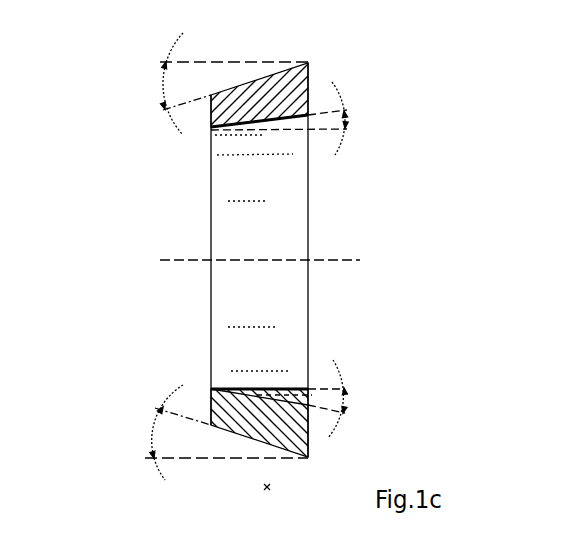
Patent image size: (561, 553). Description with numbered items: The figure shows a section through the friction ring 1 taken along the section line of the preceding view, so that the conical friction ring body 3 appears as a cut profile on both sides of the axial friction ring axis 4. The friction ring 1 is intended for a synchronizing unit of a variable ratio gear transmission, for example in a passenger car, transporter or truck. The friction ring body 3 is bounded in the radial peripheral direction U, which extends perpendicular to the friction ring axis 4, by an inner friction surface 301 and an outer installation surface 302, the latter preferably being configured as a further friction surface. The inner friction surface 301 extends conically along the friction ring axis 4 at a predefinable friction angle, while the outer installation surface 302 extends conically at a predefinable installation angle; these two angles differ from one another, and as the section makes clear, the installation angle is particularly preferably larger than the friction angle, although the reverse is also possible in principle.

The friction ring 1 is at (316, 261).
The friction ring body 3 is at (435, 98).
The friction ring axis 4 is at (347, 261).
The inner friction surface 301 is at (266, 131).
The outer installation surface 302 is at (236, 82).
The radial peripheral direction u is at (269, 487).